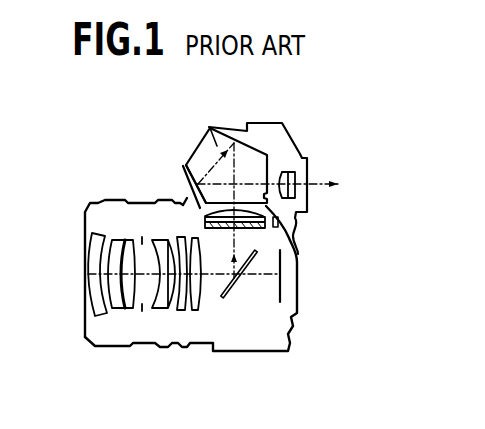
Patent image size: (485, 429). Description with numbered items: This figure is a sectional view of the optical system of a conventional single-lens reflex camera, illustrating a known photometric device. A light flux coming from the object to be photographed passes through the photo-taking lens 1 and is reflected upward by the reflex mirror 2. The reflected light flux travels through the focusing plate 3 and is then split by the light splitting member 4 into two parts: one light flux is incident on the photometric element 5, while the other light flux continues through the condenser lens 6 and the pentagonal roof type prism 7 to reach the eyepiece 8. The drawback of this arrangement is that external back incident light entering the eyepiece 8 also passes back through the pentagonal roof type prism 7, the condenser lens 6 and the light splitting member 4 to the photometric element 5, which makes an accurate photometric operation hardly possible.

The photo-taking lens 1 is at (115, 238).
The reflex mirror 2 is at (230, 290).
The focusing plate 3 is at (296, 256).
The light splitting member 4 is at (204, 219).
The photometric element 5 is at (279, 222).
The condenser lens 6 is at (265, 209).
The pentagonal roof type prism 7 is at (209, 126).
The eyepiece 8 is at (297, 172).